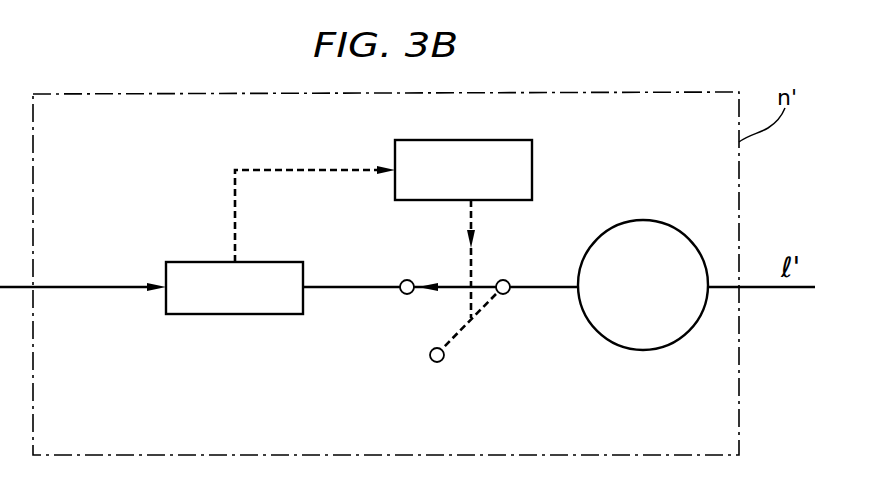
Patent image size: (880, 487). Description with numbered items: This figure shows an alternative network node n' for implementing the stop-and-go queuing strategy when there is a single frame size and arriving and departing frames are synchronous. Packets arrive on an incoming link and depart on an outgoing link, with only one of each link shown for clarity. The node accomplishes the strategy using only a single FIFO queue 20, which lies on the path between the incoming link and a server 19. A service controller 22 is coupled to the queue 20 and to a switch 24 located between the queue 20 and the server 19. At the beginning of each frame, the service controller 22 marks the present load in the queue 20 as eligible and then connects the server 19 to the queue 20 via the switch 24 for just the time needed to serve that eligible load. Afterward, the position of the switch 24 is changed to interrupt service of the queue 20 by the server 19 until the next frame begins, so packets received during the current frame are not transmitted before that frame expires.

The server 19 is at (677, 228).
The FIFO queue 20 is at (278, 262).
The service controller 22 is at (532, 151).
The switch 24 is at (474, 282).